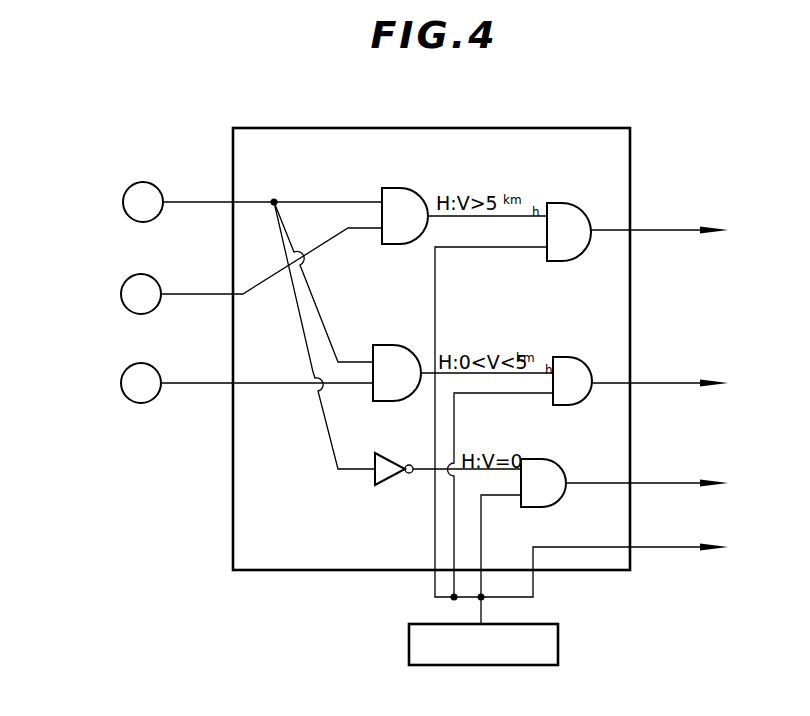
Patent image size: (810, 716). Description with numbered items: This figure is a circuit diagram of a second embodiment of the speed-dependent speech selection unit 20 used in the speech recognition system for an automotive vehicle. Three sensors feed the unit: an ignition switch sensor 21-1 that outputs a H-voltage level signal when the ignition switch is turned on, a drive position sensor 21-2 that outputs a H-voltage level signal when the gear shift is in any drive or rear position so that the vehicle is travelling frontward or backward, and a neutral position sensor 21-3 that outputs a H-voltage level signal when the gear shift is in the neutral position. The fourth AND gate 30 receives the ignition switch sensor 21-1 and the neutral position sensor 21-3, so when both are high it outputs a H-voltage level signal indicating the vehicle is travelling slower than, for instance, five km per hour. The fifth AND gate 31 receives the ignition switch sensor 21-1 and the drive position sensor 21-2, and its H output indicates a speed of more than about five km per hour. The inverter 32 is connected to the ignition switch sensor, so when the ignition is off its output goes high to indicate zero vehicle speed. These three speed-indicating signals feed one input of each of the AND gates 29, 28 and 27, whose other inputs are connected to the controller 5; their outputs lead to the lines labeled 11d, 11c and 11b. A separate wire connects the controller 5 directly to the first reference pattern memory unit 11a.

The speech selection unit 20 is at (320, 136).
The ignition switch sensor 21-1 is at (143, 182).
The drive position sensor 21-2 is at (148, 275).
The neutral position sensor 21-3 is at (143, 363).
The fifth AND gate 31 is at (410, 188).
The fourth AND gate 30 is at (398, 345).
The inverter 32 is at (389, 455).
The AND gate 29 is at (575, 204).
The AND gate 28 is at (580, 357).
The AND gate 27 is at (560, 461).
The output signal line d 11d is at (659, 218).
The output signal line c 11c is at (660, 370).
The output signal line b 11b is at (647, 471).
The first reference pattern memory unit 11a is at (679, 536).
The controller 5 is at (560, 645).